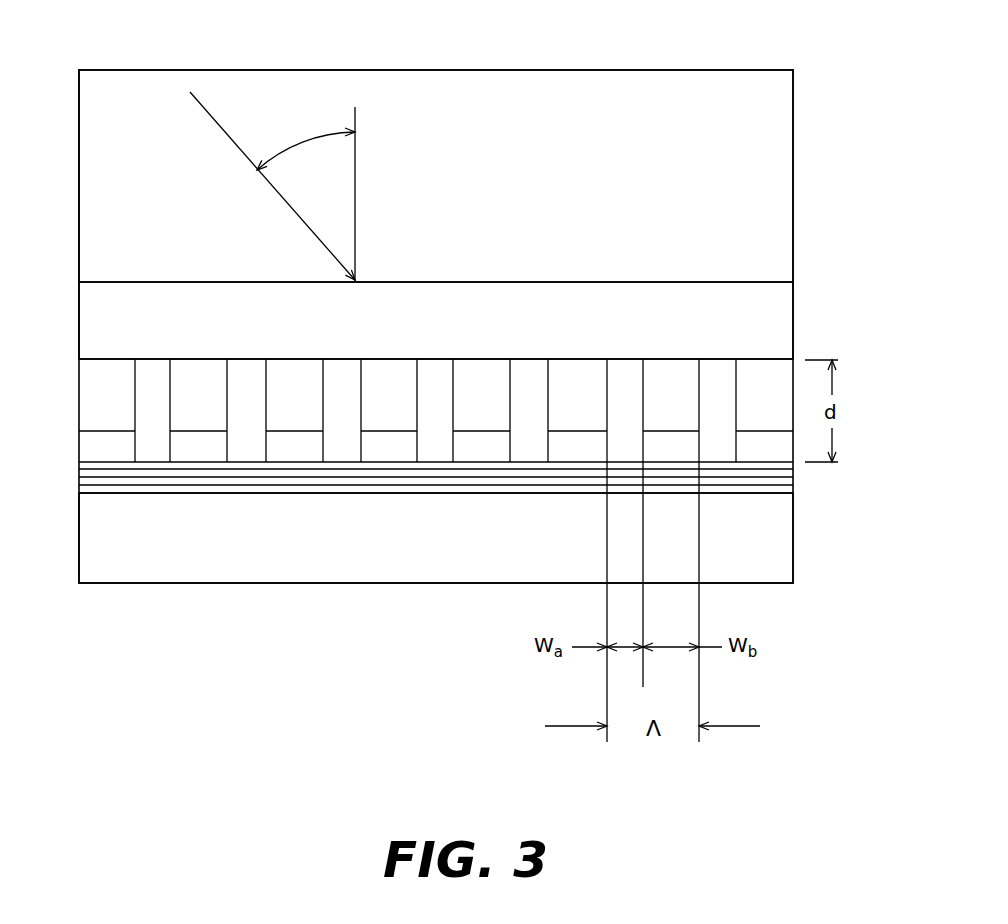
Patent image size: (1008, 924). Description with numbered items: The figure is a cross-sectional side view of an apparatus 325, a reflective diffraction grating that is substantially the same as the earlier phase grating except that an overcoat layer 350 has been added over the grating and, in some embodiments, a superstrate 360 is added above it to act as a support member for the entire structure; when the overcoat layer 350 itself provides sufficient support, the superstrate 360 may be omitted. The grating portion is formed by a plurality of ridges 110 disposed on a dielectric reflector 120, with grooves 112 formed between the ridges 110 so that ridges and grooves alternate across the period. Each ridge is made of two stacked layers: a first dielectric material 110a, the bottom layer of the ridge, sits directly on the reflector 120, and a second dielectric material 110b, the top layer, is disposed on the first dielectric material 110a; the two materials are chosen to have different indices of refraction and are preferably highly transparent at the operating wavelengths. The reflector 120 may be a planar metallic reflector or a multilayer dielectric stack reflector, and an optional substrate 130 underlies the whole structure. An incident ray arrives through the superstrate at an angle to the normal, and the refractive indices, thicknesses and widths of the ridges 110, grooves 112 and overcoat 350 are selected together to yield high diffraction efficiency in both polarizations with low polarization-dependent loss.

The apparatus 325 is at (278, 67).
The superstrate 360 is at (793, 143).
The overcoat layer 350 is at (793, 317).
The second dielectric material 110b is at (79, 368).
The first dielectric material 110a is at (79, 453).
The ridges 110 is at (88, 417).
The grooves 112 is at (143, 406).
The dielectric reflector 120 is at (268, 493).
The substrate 130 is at (215, 583).